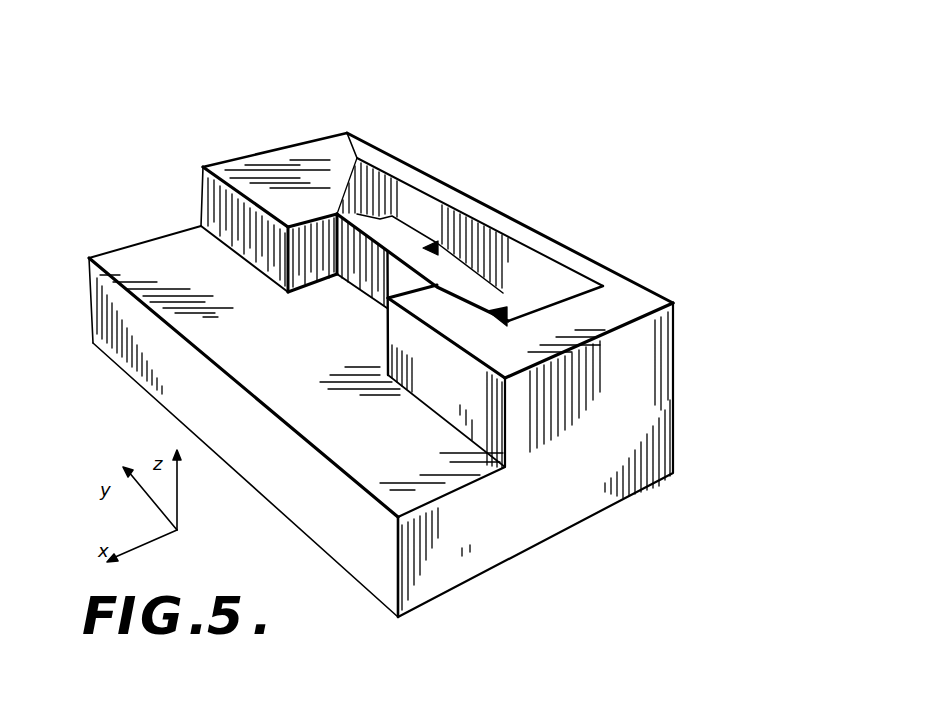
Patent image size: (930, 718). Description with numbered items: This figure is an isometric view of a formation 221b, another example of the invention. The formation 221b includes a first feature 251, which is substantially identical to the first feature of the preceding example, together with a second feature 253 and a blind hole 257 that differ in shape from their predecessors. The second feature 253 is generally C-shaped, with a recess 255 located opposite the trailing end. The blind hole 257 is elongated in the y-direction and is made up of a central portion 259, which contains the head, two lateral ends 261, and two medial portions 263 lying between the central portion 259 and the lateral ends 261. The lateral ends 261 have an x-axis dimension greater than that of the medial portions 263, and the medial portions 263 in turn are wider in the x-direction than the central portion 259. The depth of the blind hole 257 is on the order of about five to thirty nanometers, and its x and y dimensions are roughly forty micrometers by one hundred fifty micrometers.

The formation 221b is at (436, 343).
The first feature 251 is at (500, 537).
The second feature 253 is at (636, 303).
The recess 255 is at (367, 258).
The blind hole 257 is at (545, 291).
The central portion 259 is at (404, 232).
The lateral ends 261 is at (289, 183).
The medial portions 263 is at (358, 163).